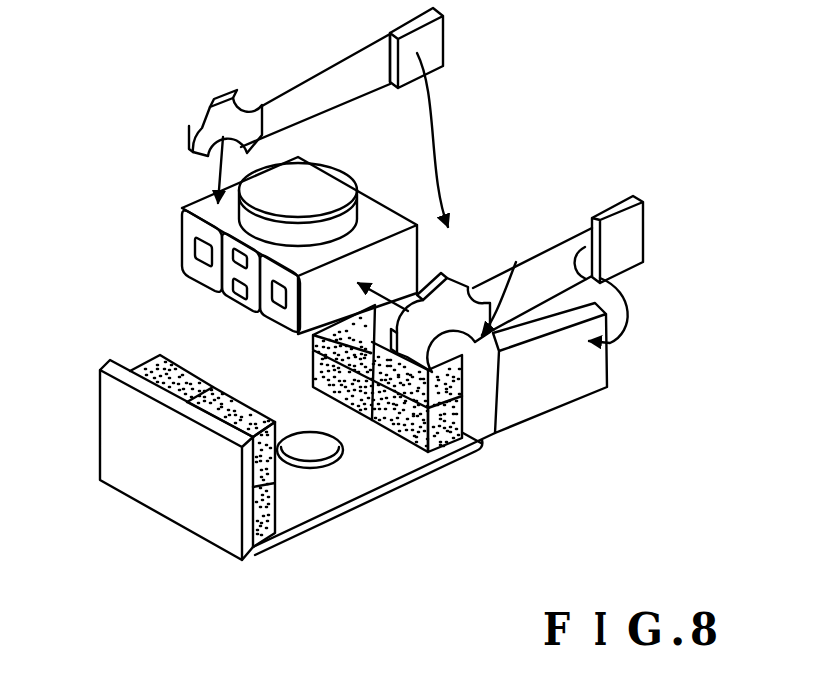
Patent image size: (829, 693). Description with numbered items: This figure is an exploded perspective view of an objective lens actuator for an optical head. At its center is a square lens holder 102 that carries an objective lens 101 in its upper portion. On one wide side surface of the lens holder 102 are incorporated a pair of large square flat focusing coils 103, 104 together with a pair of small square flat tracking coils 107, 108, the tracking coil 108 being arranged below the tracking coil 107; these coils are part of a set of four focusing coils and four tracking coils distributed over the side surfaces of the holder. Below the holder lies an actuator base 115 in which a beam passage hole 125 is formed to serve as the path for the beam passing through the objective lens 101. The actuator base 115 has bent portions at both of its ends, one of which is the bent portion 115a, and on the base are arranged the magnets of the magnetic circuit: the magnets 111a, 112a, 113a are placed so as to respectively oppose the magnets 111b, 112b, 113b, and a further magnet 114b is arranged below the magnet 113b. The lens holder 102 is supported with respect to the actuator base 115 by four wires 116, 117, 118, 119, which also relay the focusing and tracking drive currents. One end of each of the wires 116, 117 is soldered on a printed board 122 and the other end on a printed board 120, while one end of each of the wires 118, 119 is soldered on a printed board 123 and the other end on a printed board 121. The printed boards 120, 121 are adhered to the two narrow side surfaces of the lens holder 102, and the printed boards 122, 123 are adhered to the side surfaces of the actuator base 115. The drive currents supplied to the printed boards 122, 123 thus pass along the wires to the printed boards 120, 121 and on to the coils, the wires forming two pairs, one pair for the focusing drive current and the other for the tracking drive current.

The objective lens 101 is at (332, 178).
The lens holder 102 is at (184, 204).
The focusing coil 103 is at (277, 313).
The focusing coil 104 is at (186, 248).
The tracking coil 107 is at (232, 258).
The tracking coil 108 is at (245, 290).
The magnet 111a is at (223, 412).
The magnet 111b is at (467, 383).
The magnet 112a is at (267, 530).
The magnet 112b is at (447, 453).
The magnet 113a is at (153, 368).
The magnet 113b is at (345, 353).
The magnet 114b is at (368, 388).
The actuator base 115 is at (393, 475).
The bent portion 115a is at (123, 457).
The wire 116 is at (552, 242).
The wire 117 is at (528, 310).
The wire 118 is at (276, 97).
The wire 119 is at (333, 112).
The printed board 120 is at (472, 328).
The printed board 121 is at (210, 104).
The printed board 122 is at (645, 224).
The printed board 123 is at (434, 33).
The beam passage hole 125 is at (297, 470).